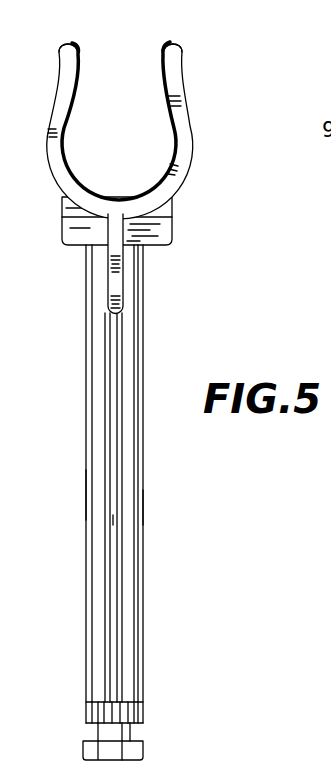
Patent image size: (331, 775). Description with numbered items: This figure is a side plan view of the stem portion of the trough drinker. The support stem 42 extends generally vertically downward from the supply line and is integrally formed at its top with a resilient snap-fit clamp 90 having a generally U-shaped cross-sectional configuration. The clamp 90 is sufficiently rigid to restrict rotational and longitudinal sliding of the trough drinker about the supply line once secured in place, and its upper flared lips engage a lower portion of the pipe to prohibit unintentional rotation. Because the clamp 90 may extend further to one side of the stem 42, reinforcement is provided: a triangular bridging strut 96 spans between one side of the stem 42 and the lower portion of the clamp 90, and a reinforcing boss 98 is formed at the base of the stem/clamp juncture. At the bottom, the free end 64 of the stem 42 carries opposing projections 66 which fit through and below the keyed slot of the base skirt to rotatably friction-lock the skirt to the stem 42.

The support stem 42 is at (122, 452).
The free end 64 is at (117, 737).
The opposing projections 66 is at (143, 756).
The resilient snap-fit clamp 90 is at (191, 136).
The triangular bridging strut 96 is at (118, 280).
The reinforcing boss 98 is at (165, 227).